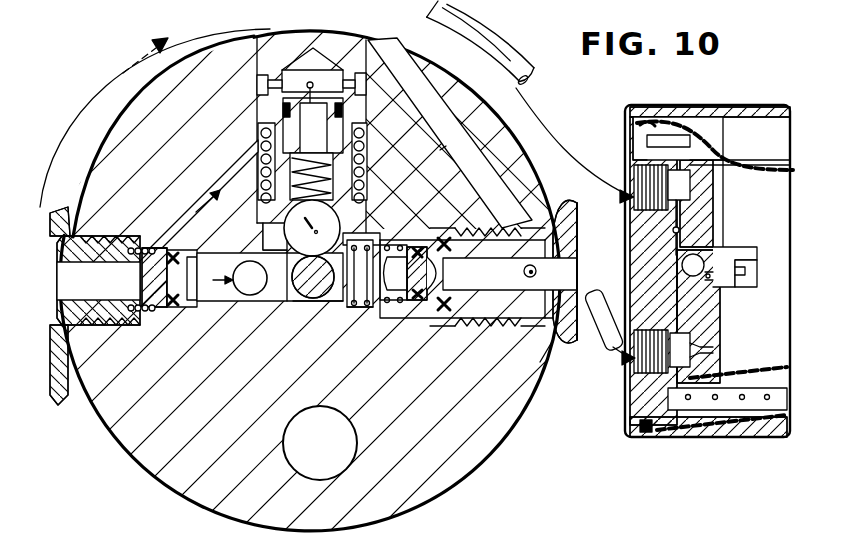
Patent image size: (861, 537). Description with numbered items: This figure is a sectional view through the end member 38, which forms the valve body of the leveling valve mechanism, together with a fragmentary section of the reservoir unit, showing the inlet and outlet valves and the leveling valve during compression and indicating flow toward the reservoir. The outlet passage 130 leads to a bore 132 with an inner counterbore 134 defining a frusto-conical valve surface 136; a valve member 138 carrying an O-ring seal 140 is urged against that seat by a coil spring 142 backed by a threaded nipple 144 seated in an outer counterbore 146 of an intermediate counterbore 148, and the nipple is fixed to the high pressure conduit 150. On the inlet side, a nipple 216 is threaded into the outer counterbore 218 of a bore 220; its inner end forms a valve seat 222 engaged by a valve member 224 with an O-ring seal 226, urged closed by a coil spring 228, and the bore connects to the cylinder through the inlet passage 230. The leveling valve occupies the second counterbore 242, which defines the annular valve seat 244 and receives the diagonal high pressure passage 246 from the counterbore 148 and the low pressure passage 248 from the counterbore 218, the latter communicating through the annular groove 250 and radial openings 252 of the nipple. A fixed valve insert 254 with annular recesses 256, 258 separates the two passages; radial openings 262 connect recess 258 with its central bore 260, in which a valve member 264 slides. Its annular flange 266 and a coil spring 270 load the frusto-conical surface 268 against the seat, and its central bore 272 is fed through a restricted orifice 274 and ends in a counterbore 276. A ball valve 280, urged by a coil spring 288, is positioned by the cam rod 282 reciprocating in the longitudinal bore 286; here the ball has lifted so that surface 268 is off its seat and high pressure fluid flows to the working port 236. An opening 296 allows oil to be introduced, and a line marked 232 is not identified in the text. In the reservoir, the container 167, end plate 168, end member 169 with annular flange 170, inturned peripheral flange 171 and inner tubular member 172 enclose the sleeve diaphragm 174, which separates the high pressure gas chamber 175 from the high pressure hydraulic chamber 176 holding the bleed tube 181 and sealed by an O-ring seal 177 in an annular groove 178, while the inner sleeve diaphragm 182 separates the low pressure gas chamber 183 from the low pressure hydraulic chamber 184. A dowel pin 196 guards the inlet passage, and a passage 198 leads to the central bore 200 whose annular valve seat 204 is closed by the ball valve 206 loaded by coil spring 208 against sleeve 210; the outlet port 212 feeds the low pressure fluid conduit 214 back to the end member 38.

The end member 38 is at (150, 102).
The outlet passage 130 is at (259, 295).
The bore 132 is at (224, 253).
The inner counterbore 134 is at (175, 308).
The frusto-conical valve surface 136 is at (200, 305).
The valve member 138 is at (197, 262).
The O-ring seal 140 is at (150, 240).
The coil spring 142 is at (152, 309).
The threaded nipple 144 is at (68, 207).
The outer counterbore 146 is at (75, 328).
The intermediate counterbore 148 is at (150, 232).
The conduit 150 is at (474, 24).
The container 167 is at (722, 438).
The end plate 168 is at (680, 150).
The end member 169 is at (652, 222).
The annular flange 170 is at (645, 398).
The inturned peripheral flange 171 is at (628, 432).
The inner tubular member 172 is at (723, 163).
The sleeve diaphragm 174 is at (687, 138).
The high pressure gas chamber 175 is at (722, 110).
The high pressure hydraulic chamber 176 is at (756, 417).
The O-ring seal 177 is at (648, 437).
The annular groove 178 is at (647, 128).
The bleed tube 181 is at (688, 410).
The inner sleeve diaphragm 182 is at (772, 160).
The low pressure gas chamber 183 is at (770, 376).
The low pressure hydraulic chamber 184 is at (757, 300).
The dowel pin 196 is at (673, 138).
The passage 198 is at (680, 230).
The central bore 200 is at (672, 265).
The annular valve seat 204 is at (690, 296).
The ball valve 206 is at (727, 305).
The coil spring 208 is at (724, 249).
The sleeve 210 is at (746, 289).
The outlet port 212 is at (715, 347).
The low pressure fluid conduit 214 is at (607, 352).
The nipple 216 is at (578, 208).
The outer counterbore 218 is at (505, 228).
The bore 220 is at (447, 237).
The valve seat 222 is at (443, 273).
The valve member 224 is at (412, 302).
The O-ring seal 226 is at (422, 300).
The coil spring 228 is at (352, 302).
The inlet passage 230 is at (390, 302).
The partition 232 is at (262, 30).
The working port 236 is at (300, 285).
The second counterbore 242 is at (283, 112).
The annular valve seat 244 is at (382, 240).
The high pressure passage 246 is at (230, 184).
The low pressure passage 248 is at (446, 146).
The annular groove 250 is at (578, 255).
The radially extending openings 252 is at (524, 272).
The valve insert 254 is at (337, 45).
The annular recess 256 is at (343, 112).
The annular recess 258 is at (366, 78).
The central bore 260 is at (258, 150).
The radial openings 262 is at (257, 80).
The valve member 264 is at (402, 117).
The annular flange 266 is at (352, 220).
The frusto-conical surface 268 is at (347, 223).
The coil spring 270 is at (333, 170).
The central bore 272 is at (300, 125).
The restricted orifice 274 is at (283, 103).
The counterbore 276 is at (368, 180).
The ball valve 280 is at (287, 233).
The cam rod 282 is at (303, 303).
The longitudinal bore 286 is at (358, 308).
The coil spring 288 is at (258, 160).
The opening 296 is at (357, 440).